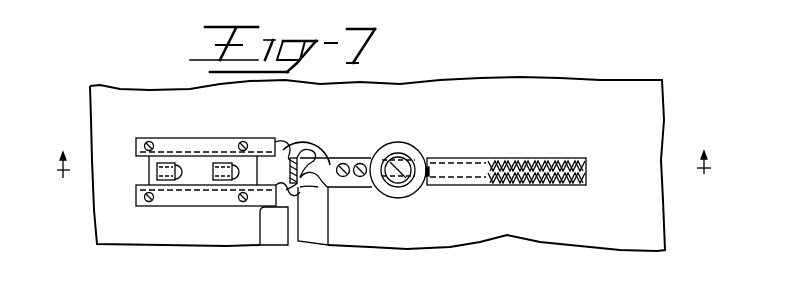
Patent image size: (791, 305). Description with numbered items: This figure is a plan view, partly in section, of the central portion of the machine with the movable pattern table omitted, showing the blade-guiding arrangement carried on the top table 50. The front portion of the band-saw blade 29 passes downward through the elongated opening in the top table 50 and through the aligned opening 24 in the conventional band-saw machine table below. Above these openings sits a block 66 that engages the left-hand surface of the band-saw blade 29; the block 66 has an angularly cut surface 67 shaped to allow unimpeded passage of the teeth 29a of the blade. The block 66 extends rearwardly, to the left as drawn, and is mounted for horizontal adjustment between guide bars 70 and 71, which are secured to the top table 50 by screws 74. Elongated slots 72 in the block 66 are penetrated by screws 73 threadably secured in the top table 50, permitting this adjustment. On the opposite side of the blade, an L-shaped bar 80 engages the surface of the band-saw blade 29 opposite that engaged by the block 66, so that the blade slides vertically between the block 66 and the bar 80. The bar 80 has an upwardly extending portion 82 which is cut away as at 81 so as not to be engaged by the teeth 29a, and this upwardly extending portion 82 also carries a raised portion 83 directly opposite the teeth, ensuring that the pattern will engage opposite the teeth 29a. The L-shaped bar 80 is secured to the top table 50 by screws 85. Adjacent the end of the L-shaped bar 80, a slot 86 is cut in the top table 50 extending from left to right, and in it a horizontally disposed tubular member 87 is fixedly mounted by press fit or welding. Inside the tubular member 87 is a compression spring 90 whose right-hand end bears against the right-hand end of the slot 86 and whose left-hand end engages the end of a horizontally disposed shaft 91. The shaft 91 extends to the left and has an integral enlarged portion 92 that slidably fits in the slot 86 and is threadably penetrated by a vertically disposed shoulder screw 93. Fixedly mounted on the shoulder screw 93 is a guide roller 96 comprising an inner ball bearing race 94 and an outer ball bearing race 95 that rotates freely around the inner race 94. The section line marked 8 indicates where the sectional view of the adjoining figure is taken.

The section line 8- 8 is at (383, 172).
The opening 24 is at (301, 212).
The band-saw blade 29 is at (306, 142).
The teeth 29a is at (290, 172).
The top table 50 is at (507, 82).
The block 66 is at (288, 143).
The angularly cut surface 67 is at (291, 194).
The guide bar 70 is at (190, 207).
The guide bar 71 is at (185, 146).
The elongated slots 72 is at (157, 171).
The screws 73 is at (167, 181).
The screws 74 is at (144, 147).
The L-shaped bar 80 is at (343, 163).
The cut away 81 is at (320, 190).
The upwardly extending portion 82 is at (318, 150).
The raised portion 83 is at (327, 187).
The screws 85 is at (360, 163).
The slot 86 is at (428, 160).
The tubular member 87 is at (496, 160).
The compression spring 90 is at (570, 159).
The shaft 91 is at (458, 185).
The enlarged portion 92 is at (410, 154).
The shoulder screw 93 is at (414, 185).
The inner ball bearing race 94 is at (397, 186).
The outer ball bearing race 95 is at (384, 185).
The guide roller 96 is at (398, 143).